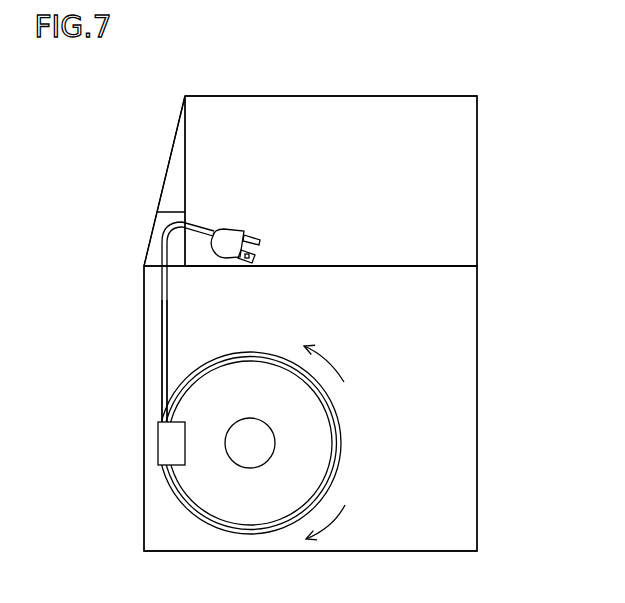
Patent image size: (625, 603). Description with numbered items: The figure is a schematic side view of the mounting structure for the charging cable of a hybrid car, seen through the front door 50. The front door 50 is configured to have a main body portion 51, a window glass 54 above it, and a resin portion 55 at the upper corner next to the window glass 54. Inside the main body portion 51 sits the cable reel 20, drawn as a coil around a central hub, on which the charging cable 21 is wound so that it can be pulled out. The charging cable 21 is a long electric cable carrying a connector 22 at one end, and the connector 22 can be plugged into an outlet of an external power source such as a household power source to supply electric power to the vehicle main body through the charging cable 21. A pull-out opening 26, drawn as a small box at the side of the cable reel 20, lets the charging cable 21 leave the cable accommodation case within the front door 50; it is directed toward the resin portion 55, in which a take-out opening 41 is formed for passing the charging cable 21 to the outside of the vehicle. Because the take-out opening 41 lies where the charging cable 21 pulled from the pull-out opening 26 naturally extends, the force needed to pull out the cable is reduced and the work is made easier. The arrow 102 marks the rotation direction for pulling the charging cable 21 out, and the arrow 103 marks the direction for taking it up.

The cable reel 20 is at (175, 510).
The charging cable 21 is at (162, 307).
The connector 22 is at (232, 243).
The pull-out opening 26 is at (172, 443).
The take-out opening 41 is at (163, 225).
The front door 50 is at (480, 126).
The main body portion 51 is at (457, 438).
The window glass 54 is at (332, 122).
The resin portion 55 is at (177, 172).
The arrow 102 is at (335, 520).
The arrow 103 is at (333, 363).